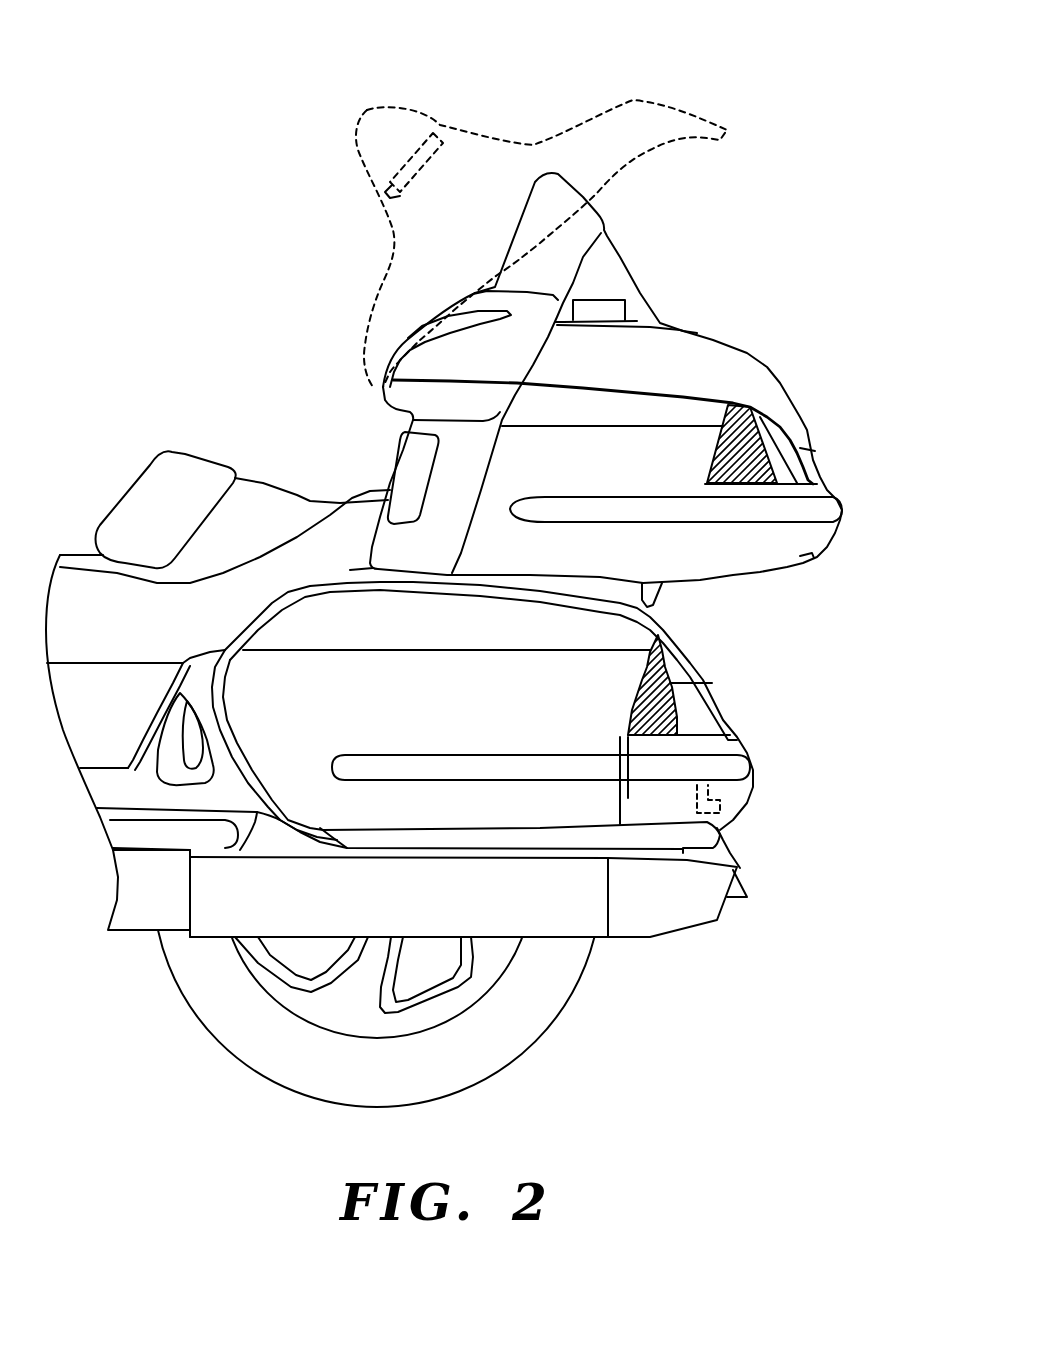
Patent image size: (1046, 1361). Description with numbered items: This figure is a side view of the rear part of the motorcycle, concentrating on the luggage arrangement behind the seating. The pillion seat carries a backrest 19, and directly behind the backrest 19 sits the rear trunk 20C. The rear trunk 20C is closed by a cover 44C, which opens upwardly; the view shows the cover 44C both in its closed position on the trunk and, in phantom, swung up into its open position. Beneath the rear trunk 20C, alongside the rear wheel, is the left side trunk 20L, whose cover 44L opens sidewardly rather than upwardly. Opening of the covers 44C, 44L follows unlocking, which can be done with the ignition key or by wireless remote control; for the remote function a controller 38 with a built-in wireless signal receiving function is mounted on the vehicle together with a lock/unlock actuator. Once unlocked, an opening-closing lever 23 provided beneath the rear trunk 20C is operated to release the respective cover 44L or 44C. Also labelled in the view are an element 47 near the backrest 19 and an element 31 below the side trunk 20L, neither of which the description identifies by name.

The backrest 19 is at (593, 217).
The backrest pad 47 is at (610, 267).
The controller 38 is at (617, 297).
The rear trunk 20C is at (787, 371).
The cover of the rear trunk 44C is at (537, 103).
The side trunk 20L is at (712, 667).
The cover of the side trunk 44L is at (463, 631).
The opening-closing lever 23 is at (723, 808).
The muffler 31 is at (593, 927).